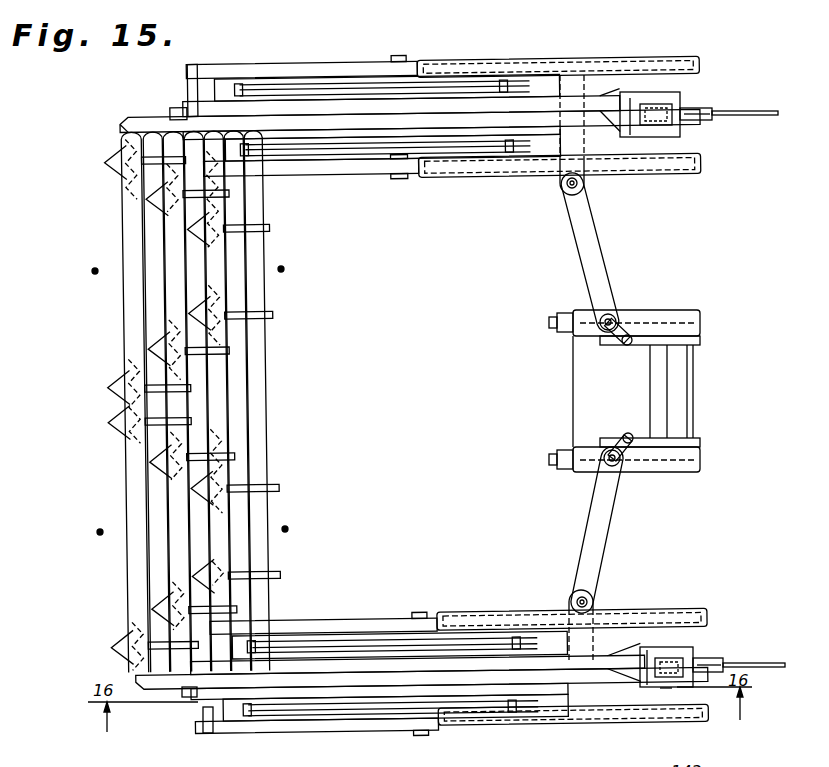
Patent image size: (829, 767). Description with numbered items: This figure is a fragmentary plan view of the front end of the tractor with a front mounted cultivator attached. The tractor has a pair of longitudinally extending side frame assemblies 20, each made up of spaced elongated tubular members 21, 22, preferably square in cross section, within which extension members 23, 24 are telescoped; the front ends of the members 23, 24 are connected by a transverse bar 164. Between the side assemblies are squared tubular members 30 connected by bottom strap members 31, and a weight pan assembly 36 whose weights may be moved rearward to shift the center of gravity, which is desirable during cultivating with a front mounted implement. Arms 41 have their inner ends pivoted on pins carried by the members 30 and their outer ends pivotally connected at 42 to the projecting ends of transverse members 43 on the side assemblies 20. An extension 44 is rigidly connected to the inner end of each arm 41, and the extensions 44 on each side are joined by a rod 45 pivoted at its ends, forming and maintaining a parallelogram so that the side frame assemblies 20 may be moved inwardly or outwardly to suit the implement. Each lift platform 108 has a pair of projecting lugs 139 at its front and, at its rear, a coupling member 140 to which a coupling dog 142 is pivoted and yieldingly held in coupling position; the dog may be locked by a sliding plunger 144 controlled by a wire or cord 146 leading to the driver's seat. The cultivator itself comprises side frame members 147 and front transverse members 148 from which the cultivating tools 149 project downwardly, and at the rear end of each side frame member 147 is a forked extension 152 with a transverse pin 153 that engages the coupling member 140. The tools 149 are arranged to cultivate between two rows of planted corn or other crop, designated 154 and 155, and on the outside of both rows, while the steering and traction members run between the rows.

The side frame assembly 20 is at (500, 58).
The tubular member 21 is at (640, 60).
The tubular member 22 is at (674, 178).
The extension member 23 is at (322, 64).
The extension member 24 is at (338, 175).
The tubular member 30 is at (672, 308).
The bottom strap member 31 is at (684, 395).
The weight pan assembly 36 is at (585, 395).
The arm 41 is at (600, 268).
The pivotal connection 42 is at (582, 183).
The transverse member 43 is at (588, 85).
The extension 44 is at (620, 315).
The rod 45 is at (692, 346).
The lift platform 108 is at (512, 103).
The projecting lug 139 is at (176, 110).
The coupling member 140 is at (682, 100).
The coupling dog 142 is at (650, 110).
The sliding plunger 144 is at (690, 120).
The wire or cord 146 is at (747, 113).
The side frame member 147 is at (364, 120).
The front transverse member 148 is at (232, 396).
The cultivating tool 149 is at (125, 640).
The forked extension 152 is at (630, 98).
The transverse pin 153 is at (668, 690).
The row of planted crop 154 is at (95, 270).
The row of planted crop 155 is at (100, 530).
The transverse bar 164 is at (186, 78).